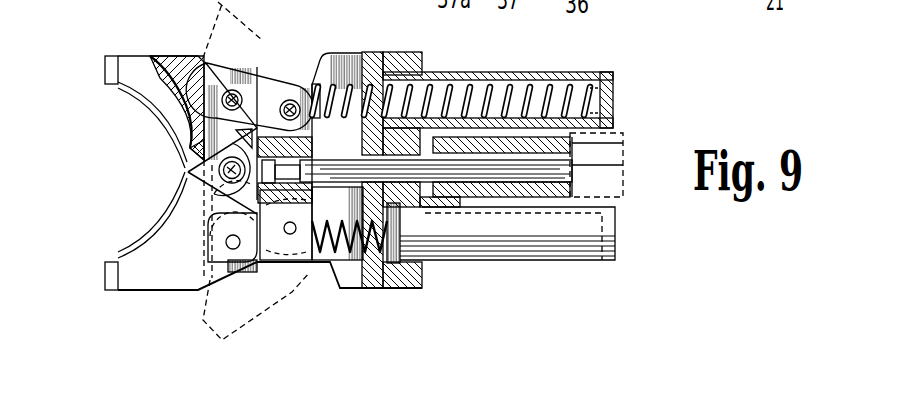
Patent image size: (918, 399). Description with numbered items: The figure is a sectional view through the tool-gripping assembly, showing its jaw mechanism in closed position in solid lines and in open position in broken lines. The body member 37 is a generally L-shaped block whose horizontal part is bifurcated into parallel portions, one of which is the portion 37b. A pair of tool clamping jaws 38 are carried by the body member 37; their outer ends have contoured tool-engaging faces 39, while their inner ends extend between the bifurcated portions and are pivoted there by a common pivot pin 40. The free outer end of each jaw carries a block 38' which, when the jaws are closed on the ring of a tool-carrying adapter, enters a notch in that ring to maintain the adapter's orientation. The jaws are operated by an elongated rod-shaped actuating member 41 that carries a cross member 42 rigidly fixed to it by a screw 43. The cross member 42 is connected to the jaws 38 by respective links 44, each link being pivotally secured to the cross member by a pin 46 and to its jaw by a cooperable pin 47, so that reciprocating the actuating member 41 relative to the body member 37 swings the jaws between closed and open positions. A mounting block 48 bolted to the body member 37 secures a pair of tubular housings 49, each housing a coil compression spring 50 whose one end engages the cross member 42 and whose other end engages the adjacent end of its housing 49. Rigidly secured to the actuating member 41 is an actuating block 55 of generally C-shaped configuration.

The body member 37 is at (362, 52).
The parallelly extending portion 37b is at (274, 72).
The tool clamping jaw 38 is at (187, 175).
The block 38' is at (89, 172).
The tool-engaging face 39 is at (162, 117).
The pivot pin 40 is at (186, 171).
The actuating member 41 is at (572, 177).
The cross member 42 is at (314, 72).
The screw 43 is at (308, 146).
The link 44 is at (284, 92).
The pin 46 is at (276, 74).
The pin 47 is at (204, 68).
The mounting block 48 is at (417, 53).
The tubular housing 49 is at (500, 72).
The coil compression spring 50 is at (566, 84).
The actuating block 55 is at (620, 143).